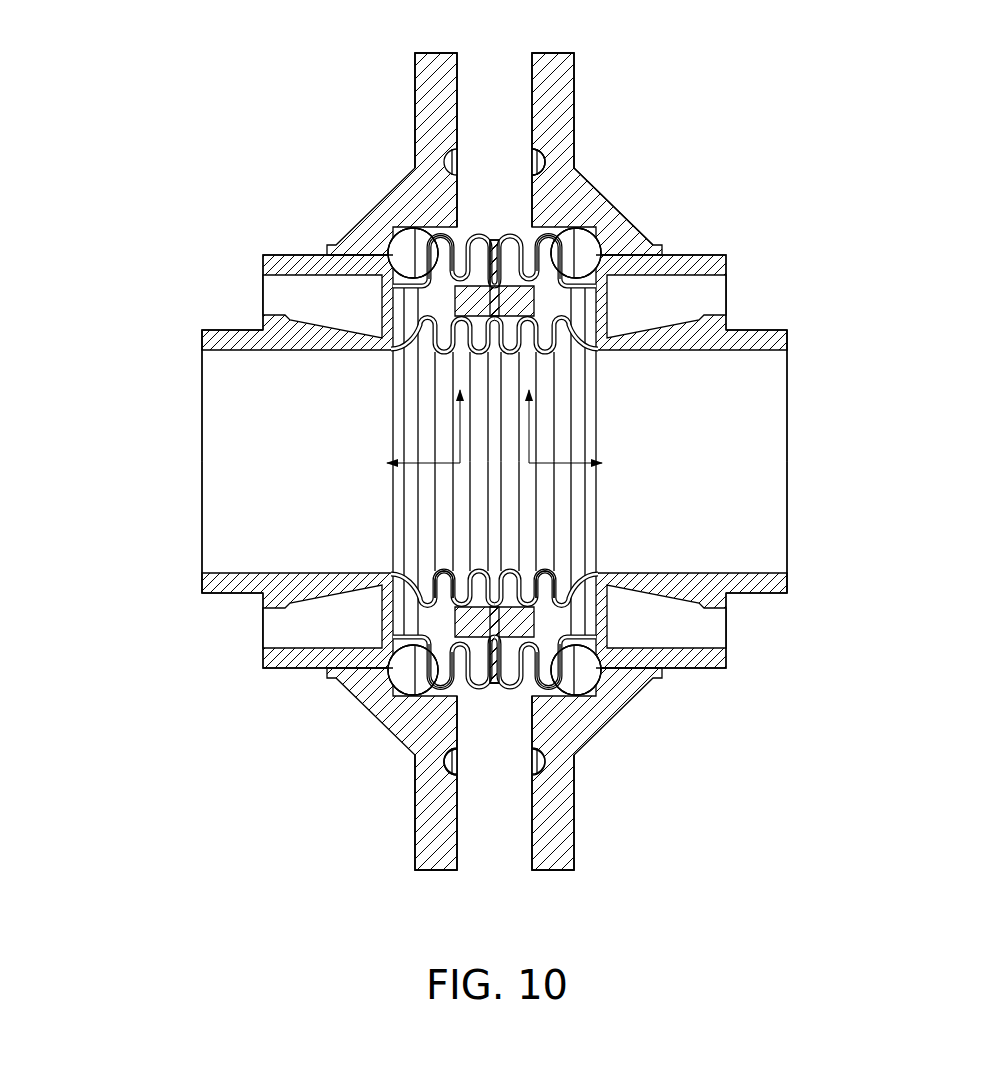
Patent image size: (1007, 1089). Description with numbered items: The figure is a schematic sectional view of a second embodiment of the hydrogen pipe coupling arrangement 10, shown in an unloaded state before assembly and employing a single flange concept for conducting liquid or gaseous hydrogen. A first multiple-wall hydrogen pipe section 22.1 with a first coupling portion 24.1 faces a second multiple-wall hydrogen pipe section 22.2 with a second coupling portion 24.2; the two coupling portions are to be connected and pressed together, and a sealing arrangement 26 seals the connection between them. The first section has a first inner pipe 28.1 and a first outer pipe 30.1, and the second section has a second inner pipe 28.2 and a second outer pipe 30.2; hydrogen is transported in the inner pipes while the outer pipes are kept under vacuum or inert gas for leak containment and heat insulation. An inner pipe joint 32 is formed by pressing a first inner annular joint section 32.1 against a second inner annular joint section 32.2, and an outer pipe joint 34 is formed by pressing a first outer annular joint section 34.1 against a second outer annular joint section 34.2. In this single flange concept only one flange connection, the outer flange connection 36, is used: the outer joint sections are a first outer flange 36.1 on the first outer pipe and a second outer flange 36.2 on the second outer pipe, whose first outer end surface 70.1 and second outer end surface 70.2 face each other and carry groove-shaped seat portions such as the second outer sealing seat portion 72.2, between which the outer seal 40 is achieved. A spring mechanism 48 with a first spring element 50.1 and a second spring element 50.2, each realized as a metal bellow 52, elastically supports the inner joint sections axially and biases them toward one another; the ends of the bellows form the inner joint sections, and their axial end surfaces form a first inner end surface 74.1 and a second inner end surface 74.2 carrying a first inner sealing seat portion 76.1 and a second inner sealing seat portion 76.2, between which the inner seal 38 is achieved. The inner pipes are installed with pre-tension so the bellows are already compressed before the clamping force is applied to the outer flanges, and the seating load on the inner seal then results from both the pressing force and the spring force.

The hydrogen pipe coupling arrangement 10 is at (100, 210).
The first multiple-wall hydrogen pipe section 22.1 is at (162, 673).
The second multiple-wall hydrogen pipe section 22.2 is at (850, 673).
The first coupling portion 24.1 is at (432, 107).
The second coupling portion 24.2 is at (548, 172).
The sealing arrangement 26 is at (700, 185).
The first inner pipe 28.1 is at (203, 590).
The second inner pipe 28.2 is at (787, 588).
The first outer pipe 30.1 is at (297, 667).
The second outer pipe 30.2 is at (693, 660).
The inner pipe joint 32 is at (452, 572).
The first inner annular joint section 32.1 is at (480, 578).
The second inner annular joint section 32.2 is at (535, 580).
The outer pipe joint 34 is at (400, 130).
The first outer annular joint section 34.1 is at (433, 818).
The second outer annular joint section 34.2 is at (563, 852).
The outer flange connection 36 is at (583, 92).
The first outer flange 36.1 is at (563, 812).
The second outer flange 36.2 is at (428, 853).
The inner seal 38 is at (593, 243).
The outer seal 40 is at (560, 143).
The spring mechanism 48 is at (588, 262).
The first spring element 50.1 is at (430, 330).
The second spring element 50.2 is at (580, 318).
The metal bellow 52 is at (500, 303).
The first outer end surface 70.1 is at (455, 822).
The second outer end surface 70.2 is at (550, 742).
The second outer sealing seat portion 72.2 is at (540, 150).
The first inner end surface 74.1 is at (494, 697).
The second inner end surface 74.2 is at (498, 285).
The first inner sealing seat portion 76.1 is at (475, 612).
The second inner sealing seat portion 76.2 is at (525, 630).